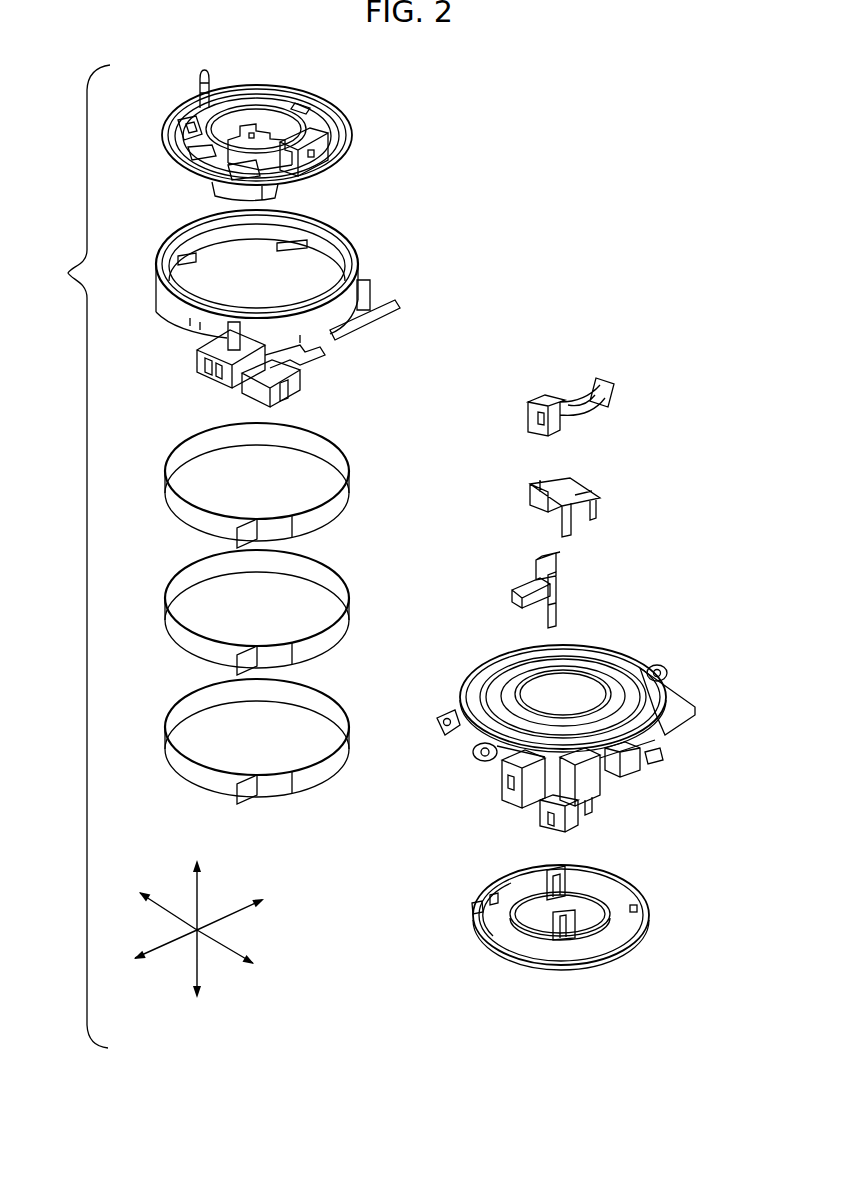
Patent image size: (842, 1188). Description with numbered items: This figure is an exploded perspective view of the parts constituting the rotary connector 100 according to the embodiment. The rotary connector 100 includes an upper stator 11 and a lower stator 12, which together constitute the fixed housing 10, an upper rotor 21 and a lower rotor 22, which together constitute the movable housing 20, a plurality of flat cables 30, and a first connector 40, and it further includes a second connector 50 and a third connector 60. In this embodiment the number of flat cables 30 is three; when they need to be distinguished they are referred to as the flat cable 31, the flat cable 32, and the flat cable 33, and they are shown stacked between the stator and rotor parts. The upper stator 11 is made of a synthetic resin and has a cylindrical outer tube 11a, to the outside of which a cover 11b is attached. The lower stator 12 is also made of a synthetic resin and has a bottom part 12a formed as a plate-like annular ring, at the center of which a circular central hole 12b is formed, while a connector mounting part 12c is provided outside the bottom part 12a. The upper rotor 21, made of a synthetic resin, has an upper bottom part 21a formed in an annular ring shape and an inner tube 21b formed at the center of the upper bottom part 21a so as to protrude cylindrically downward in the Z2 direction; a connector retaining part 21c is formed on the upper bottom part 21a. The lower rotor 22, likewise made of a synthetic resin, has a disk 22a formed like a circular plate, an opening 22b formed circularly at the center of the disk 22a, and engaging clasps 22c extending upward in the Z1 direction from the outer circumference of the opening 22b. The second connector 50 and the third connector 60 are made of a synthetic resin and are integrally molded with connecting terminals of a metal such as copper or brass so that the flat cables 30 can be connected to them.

The rotary connector 100 is at (575, 160).
The fixed housing 10 is at (439, 518).
The upper stator 11 is at (378, 297).
The outer tube 11a is at (305, 240).
The cover 11b is at (252, 390).
The lower stator 12 is at (672, 712).
The bottom part 12a is at (480, 693).
The central hole 12b is at (558, 700).
The connector mounting part 12c is at (568, 782).
The movable housing 20 is at (419, 507).
The upper rotor 21 is at (268, 92).
The upper bottom part 21a is at (336, 130).
The inner tube 21b is at (250, 120).
The connector retaining part 21c is at (317, 176).
The lower rotor 22 is at (638, 892).
The disk 22a is at (621, 931).
The opening 22b is at (550, 898).
The engaging clasps 22c is at (520, 896).
The flat cables 30 is at (286, 614).
The flat cable 31 is at (313, 775).
The flat cable 32 is at (313, 646).
The flat cable 33 is at (313, 519).
The first connector 40 is at (558, 560).
The second connector 50 is at (573, 488).
The third connector 60 is at (611, 394).